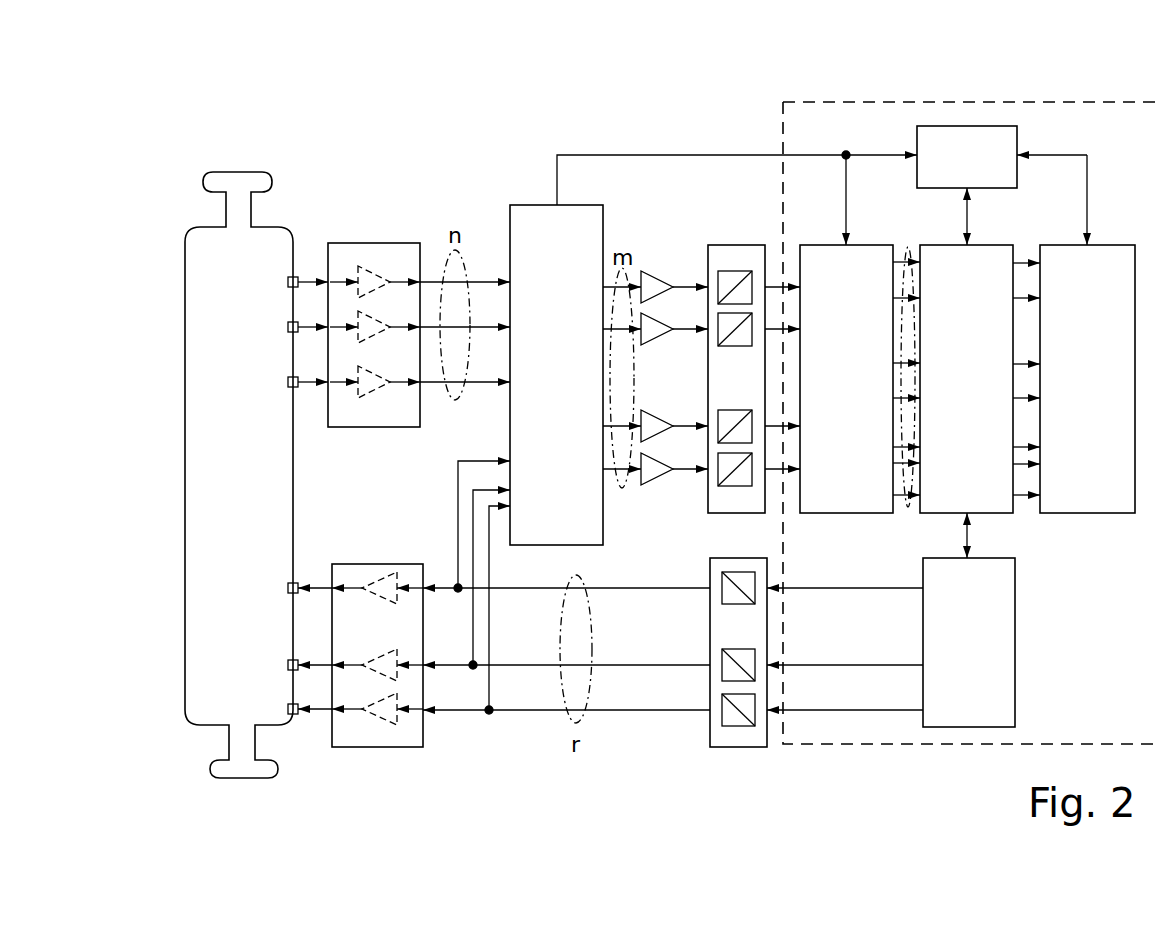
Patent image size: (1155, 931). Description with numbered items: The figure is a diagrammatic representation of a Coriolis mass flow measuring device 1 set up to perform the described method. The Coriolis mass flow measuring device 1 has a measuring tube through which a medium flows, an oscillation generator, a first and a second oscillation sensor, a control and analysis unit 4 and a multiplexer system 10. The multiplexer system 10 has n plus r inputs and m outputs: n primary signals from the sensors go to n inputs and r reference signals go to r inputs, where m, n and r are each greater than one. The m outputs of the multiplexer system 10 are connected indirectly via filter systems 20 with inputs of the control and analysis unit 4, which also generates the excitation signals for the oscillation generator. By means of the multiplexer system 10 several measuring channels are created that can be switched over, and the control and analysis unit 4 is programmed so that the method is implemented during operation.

The Coriolis mass flow measuring device 1 is at (340, 156).
The control and analysis unit 4 is at (822, 141).
The multiplexer system 10 is at (546, 244).
The filter systems 20 is at (747, 268).